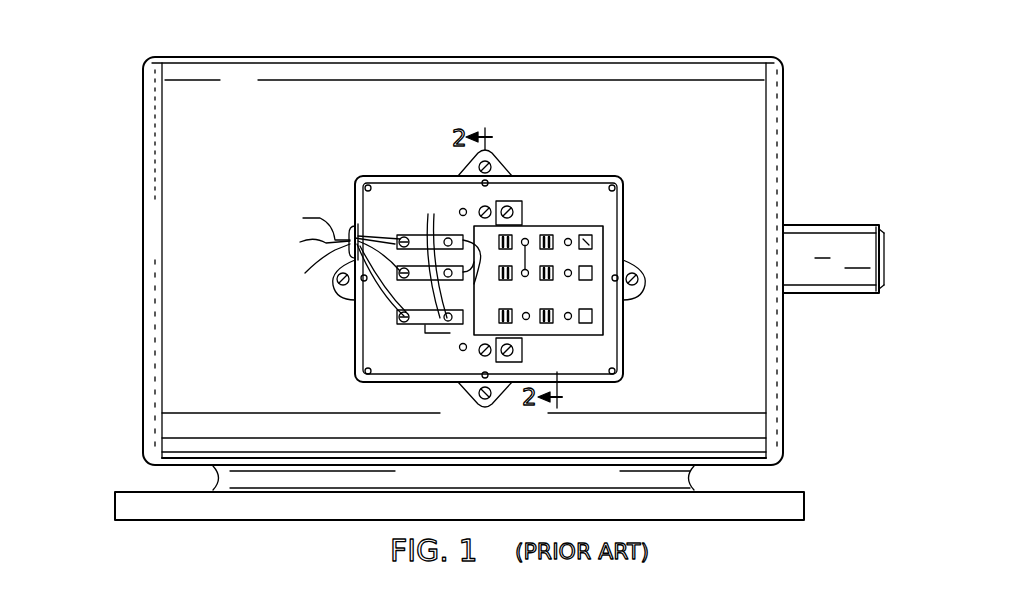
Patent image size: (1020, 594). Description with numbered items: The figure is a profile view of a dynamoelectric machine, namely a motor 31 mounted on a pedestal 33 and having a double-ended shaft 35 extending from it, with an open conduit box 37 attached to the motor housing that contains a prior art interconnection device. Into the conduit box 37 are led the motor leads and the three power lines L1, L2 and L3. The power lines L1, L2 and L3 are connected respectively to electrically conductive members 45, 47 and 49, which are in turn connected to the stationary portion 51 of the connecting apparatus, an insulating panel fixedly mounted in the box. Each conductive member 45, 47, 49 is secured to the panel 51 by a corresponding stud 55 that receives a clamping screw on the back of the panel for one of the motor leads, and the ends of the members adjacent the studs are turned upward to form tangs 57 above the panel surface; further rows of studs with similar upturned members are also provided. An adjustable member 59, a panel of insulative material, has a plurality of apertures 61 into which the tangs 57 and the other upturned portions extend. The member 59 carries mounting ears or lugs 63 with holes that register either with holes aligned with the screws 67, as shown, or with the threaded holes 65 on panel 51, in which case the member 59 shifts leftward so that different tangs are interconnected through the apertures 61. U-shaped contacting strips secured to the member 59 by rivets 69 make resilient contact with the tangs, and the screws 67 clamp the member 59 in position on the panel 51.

The motor 31 is at (579, 52).
The pedestal 33 is at (812, 490).
The double-ended shaft 35 is at (818, 225).
The conduit box 37 is at (563, 176).
The electrically conductive member 45 is at (414, 236).
The electrically conductive member 47 is at (403, 282).
The electrically conductive member 49 is at (407, 328).
The stationary portion 51 is at (452, 333).
The stud 55 is at (448, 255).
The tang 57 is at (468, 311).
The adjustable member 59 is at (600, 227).
The aperture 61 is at (594, 239).
The mounting ear 63 is at (517, 212).
The threaded hole 65 is at (462, 208).
The screw 67 is at (509, 195).
The rivet 69 is at (527, 238).
The power line L1 is at (315, 223).
The power line L2 is at (308, 243).
The power line L3 is at (313, 268).